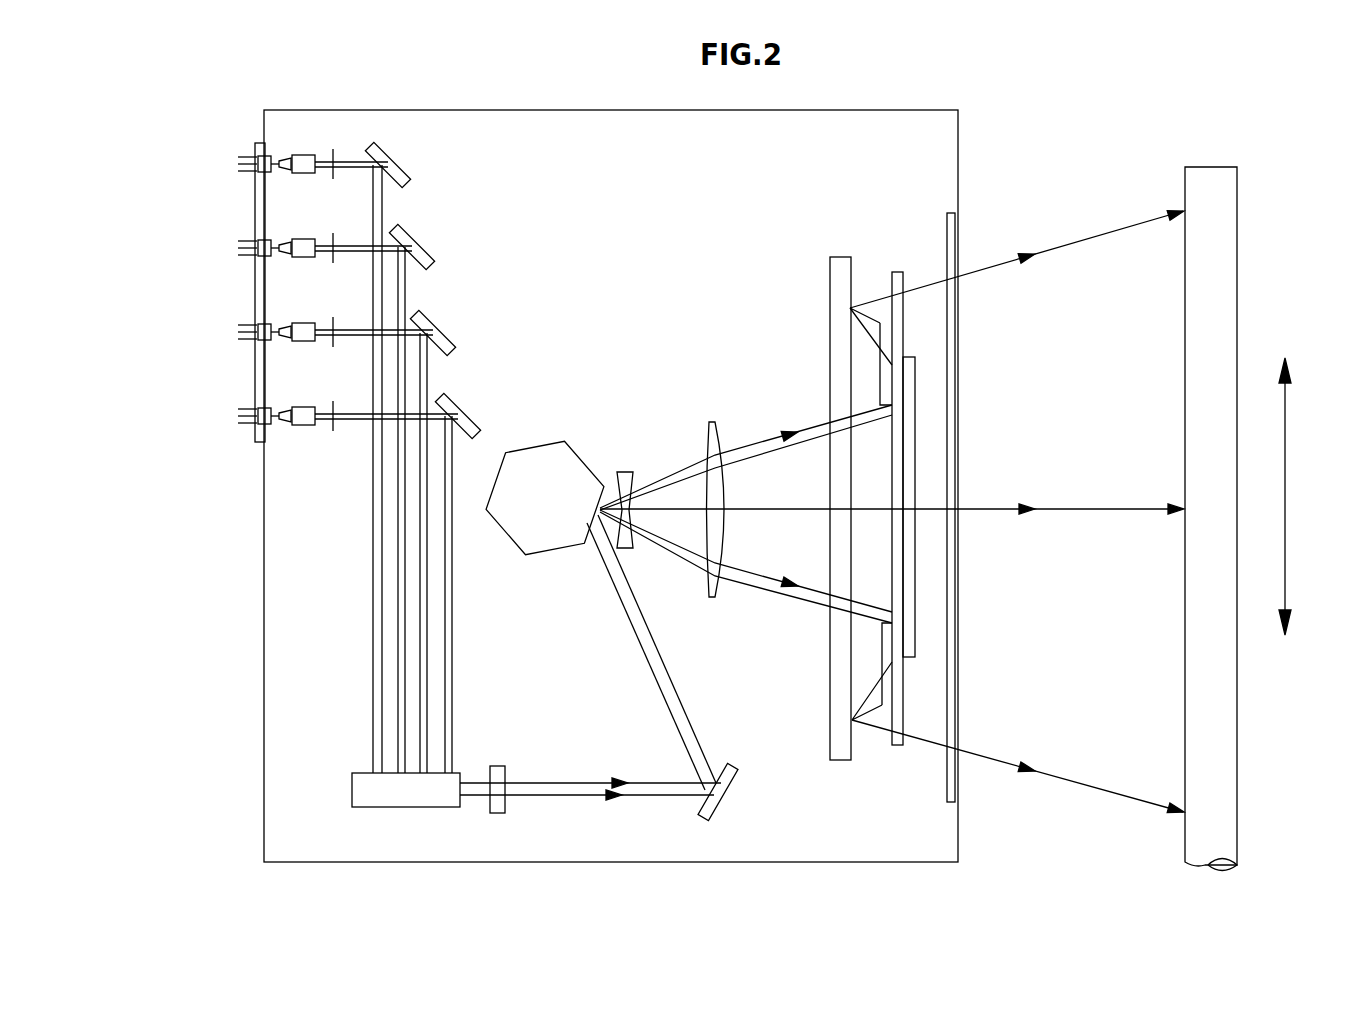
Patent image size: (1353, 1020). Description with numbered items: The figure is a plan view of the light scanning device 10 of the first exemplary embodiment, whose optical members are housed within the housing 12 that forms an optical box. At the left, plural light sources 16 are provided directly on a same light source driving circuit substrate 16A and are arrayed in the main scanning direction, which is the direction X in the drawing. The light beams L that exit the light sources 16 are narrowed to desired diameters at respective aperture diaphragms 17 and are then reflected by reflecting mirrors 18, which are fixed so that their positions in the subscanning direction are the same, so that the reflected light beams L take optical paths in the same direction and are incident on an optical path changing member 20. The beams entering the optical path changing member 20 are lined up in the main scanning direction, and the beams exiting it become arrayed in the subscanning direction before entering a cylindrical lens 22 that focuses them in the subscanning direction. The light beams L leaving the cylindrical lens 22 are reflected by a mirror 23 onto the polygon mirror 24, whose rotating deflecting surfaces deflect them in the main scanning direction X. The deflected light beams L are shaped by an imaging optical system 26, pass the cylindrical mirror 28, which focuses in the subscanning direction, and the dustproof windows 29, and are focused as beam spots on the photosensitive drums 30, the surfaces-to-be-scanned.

The light scanning device 10 is at (266, 90).
The housing 12 is at (505, 108).
The light sources 16 is at (228, 152).
The light source driving circuit substrate 16A is at (253, 436).
The aperture diaphragms 17 is at (336, 150).
The reflecting mirrors 18 is at (410, 150).
The optical path changing member 20 is at (406, 795).
The cylindrical lens 22 is at (503, 800).
The mirror 23 is at (725, 803).
The polygon mirror 24 is at (578, 448).
The imaging optical system 26 is at (625, 410).
The cylindrical mirror 28 is at (845, 257).
The dustproof windows 29 is at (956, 240).
The photosensitive drums 30 is at (1222, 800).
The light beams L is at (1083, 235).
The main scanning direction X is at (1297, 497).